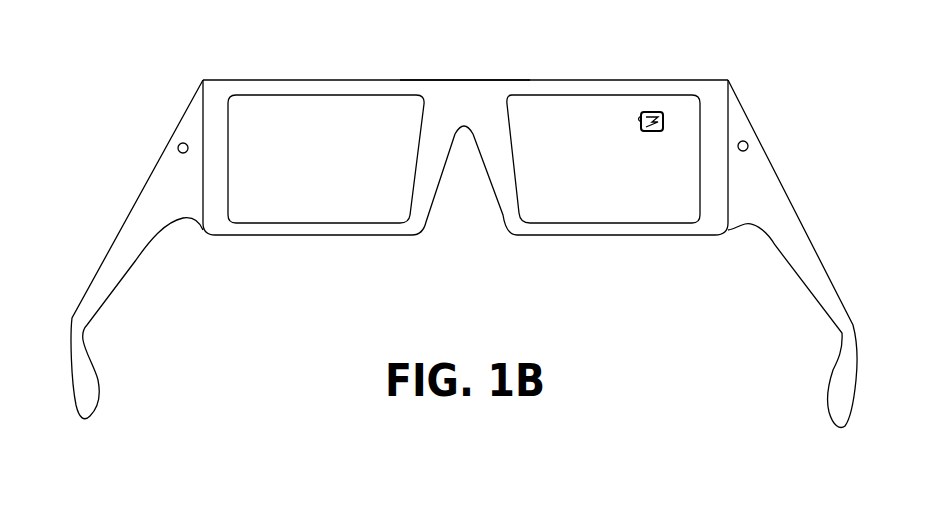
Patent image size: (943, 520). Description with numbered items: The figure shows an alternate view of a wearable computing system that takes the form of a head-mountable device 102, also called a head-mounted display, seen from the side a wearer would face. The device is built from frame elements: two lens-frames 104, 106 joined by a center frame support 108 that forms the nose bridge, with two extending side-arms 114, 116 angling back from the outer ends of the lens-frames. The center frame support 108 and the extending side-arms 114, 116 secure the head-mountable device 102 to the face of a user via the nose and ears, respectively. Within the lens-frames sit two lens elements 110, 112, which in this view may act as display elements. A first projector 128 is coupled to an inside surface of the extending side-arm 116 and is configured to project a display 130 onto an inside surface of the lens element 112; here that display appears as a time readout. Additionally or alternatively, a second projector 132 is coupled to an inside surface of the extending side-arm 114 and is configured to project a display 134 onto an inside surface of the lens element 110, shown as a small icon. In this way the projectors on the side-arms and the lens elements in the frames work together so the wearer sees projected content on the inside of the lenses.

The head-mountable device 102 is at (246, 61).
The lens-frame 104 is at (683, 235).
The lens-frame 106 is at (252, 236).
The center frame support 108 is at (462, 80).
The lens element 110 is at (568, 213).
The lens element 112 is at (343, 213).
The extending side-arm 114 is at (782, 186).
The extending side-arm 116 is at (127, 217).
The first projector 128 is at (177, 148).
The display 130 is at (317, 126).
The second projector 132 is at (744, 140).
The display 134 is at (643, 128).